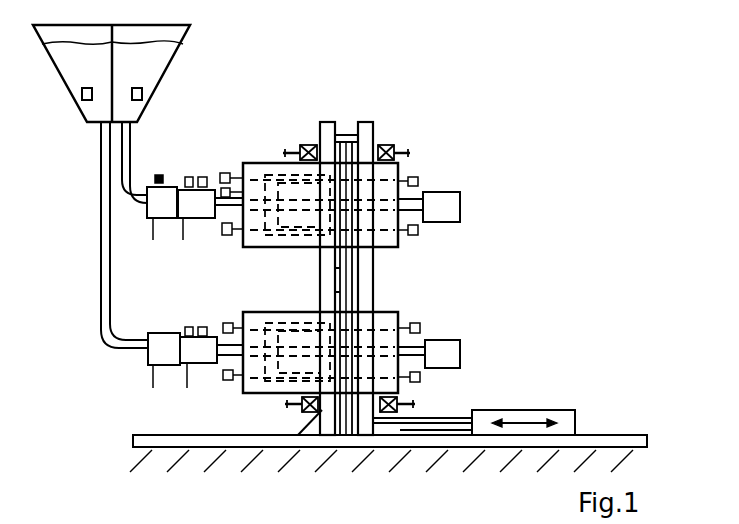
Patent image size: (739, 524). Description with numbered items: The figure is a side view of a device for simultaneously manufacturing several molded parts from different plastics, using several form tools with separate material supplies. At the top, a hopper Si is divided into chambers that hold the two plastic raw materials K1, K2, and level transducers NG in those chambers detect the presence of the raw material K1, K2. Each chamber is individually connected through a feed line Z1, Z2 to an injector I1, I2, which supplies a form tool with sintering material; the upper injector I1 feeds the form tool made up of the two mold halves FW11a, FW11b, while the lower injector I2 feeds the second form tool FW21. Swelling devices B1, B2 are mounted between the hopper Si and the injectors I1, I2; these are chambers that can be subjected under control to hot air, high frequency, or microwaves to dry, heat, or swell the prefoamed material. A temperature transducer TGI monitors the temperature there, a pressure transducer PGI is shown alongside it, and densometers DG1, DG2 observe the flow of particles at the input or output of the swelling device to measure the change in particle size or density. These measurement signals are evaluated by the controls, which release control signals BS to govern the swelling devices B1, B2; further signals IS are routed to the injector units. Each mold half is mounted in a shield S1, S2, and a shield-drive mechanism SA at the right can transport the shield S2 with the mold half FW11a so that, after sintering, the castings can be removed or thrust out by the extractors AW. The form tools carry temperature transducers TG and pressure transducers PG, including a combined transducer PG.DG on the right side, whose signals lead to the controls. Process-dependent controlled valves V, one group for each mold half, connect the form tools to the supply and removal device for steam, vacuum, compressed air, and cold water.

The hopper Si is at (163, 62).
The plastic raw material K1 is at (133, 84).
The plastic raw material K2 is at (91, 84).
The level transducer NG is at (80, 100).
The feed line Z1 is at (121, 173).
The feed line Z2 is at (101, 286).
The swelling device B1 is at (162, 202).
The injector I1 is at (210, 197).
The swelling device B2 is at (164, 349).
The injector I2 is at (211, 350).
The densometer DG1 is at (158, 178).
The densometer DG2 is at (222, 189).
The temperature transducer TG is at (225, 173).
The pressure transducer PG is at (227, 235).
The control signal BS is at (153, 240).
The injection control IS is at (183, 240).
The mold half FW11a is at (397, 163).
The mold half FW11b is at (258, 250).
The form tool FW21 is at (400, 322).
The process-dependent controlled valve V is at (305, 145).
The shield S1 is at (325, 122).
The shield S2 is at (365, 122).
The extractor AW is at (429, 280).
The position and pressure sensor PG.DG is at (418, 238).
The temperature transducer TGI is at (185, 330).
The pressure transducer PGI is at (202, 327).
The shield-drive mechanism SA is at (562, 417).